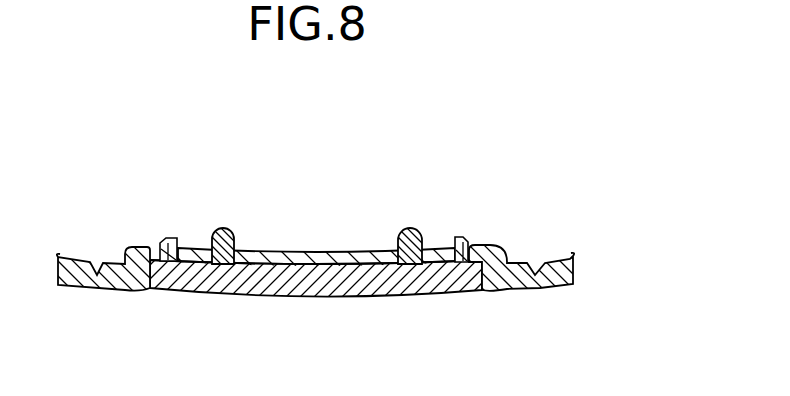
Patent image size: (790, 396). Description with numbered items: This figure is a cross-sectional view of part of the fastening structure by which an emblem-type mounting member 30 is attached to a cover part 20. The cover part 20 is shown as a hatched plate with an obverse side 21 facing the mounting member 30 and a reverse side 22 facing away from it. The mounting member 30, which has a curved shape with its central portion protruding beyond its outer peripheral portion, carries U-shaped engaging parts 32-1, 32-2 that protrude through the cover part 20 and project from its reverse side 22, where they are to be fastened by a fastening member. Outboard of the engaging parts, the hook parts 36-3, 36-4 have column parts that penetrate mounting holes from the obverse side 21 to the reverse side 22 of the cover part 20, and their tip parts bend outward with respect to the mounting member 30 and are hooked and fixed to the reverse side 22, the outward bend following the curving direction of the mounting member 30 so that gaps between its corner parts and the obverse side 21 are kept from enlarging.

The cover part 20 is at (315, 306).
The obverse side 21 is at (341, 266).
The reverse side 22 is at (306, 252).
The mounting member 30 is at (383, 281).
The U-shaped engaging part 32-1 is at (410, 228).
The U-shaped engaging part 32-2 is at (221, 228).
The hook part 36-3 is at (461, 237).
The hook part 36-4 is at (169, 238).